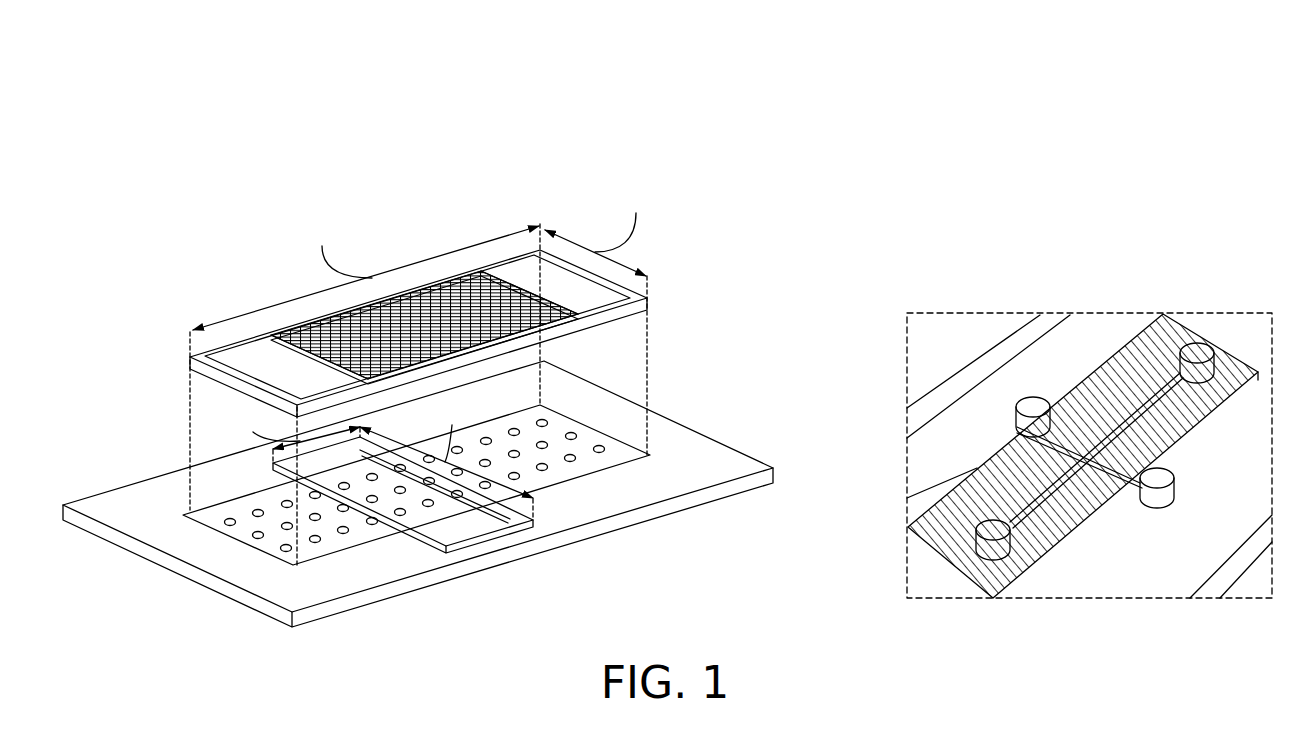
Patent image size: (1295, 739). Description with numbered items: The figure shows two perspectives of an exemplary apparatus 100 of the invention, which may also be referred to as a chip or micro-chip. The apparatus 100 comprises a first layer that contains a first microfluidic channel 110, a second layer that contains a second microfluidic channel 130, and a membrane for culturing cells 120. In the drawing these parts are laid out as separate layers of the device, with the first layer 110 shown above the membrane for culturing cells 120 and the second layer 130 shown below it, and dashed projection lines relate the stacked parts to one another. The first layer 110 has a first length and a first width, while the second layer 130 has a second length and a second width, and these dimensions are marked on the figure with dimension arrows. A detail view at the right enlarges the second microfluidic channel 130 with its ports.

The apparatus 100 is at (667, 337).
The first microfluidic channel 110 is at (1167, 377).
The membrane for culturing cells 120 is at (1010, 433).
The second microfluidic channel 130 is at (458, 530).